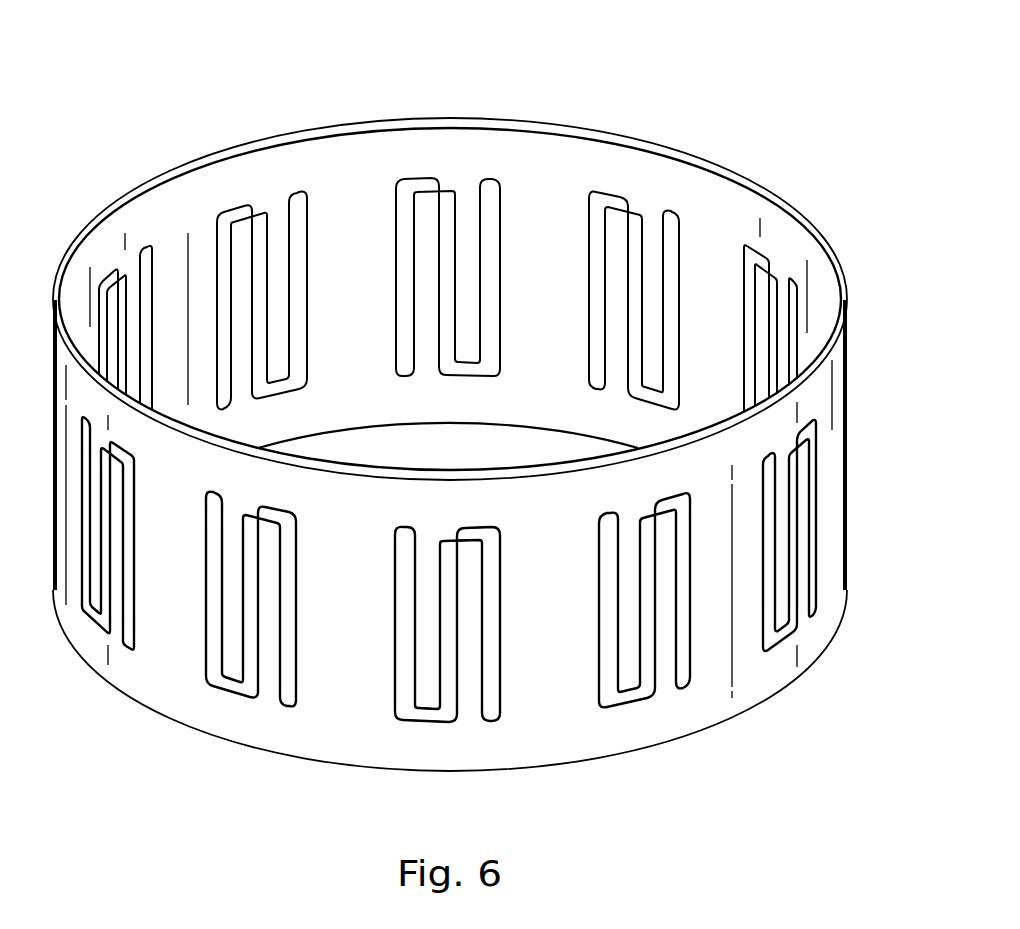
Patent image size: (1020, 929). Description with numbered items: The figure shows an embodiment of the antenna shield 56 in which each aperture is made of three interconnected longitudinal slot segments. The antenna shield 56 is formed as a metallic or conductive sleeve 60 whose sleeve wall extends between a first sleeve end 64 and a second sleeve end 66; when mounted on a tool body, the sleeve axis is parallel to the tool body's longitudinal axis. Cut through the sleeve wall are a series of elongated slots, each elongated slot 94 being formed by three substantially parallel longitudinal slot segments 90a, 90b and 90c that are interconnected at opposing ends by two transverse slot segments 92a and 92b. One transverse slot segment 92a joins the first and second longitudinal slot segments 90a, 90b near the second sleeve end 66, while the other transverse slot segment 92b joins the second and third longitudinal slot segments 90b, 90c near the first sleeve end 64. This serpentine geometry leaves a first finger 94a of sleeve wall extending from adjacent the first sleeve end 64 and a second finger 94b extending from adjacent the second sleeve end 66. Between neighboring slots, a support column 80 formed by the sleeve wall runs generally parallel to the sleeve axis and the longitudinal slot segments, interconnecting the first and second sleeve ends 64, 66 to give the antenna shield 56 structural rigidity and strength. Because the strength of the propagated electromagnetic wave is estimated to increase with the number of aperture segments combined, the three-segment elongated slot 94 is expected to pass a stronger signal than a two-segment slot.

The antenna shield 56 is at (257, 64).
The sleeve 60 is at (552, 162).
The first sleeve end 64 is at (708, 167).
The second sleeve end 66 is at (237, 748).
The support column 80 is at (172, 645).
The longitudinal slot segment 90a is at (407, 548).
The longitudinal slot segment 90b is at (448, 630).
The longitudinal slot segment 90c is at (492, 582).
The transverse slot segment 92a is at (427, 722).
The transverse slot segment 92b is at (470, 533).
The elongated slot 94 is at (486, 745).
The first finger 94a is at (427, 607).
The second finger 94b is at (470, 665).